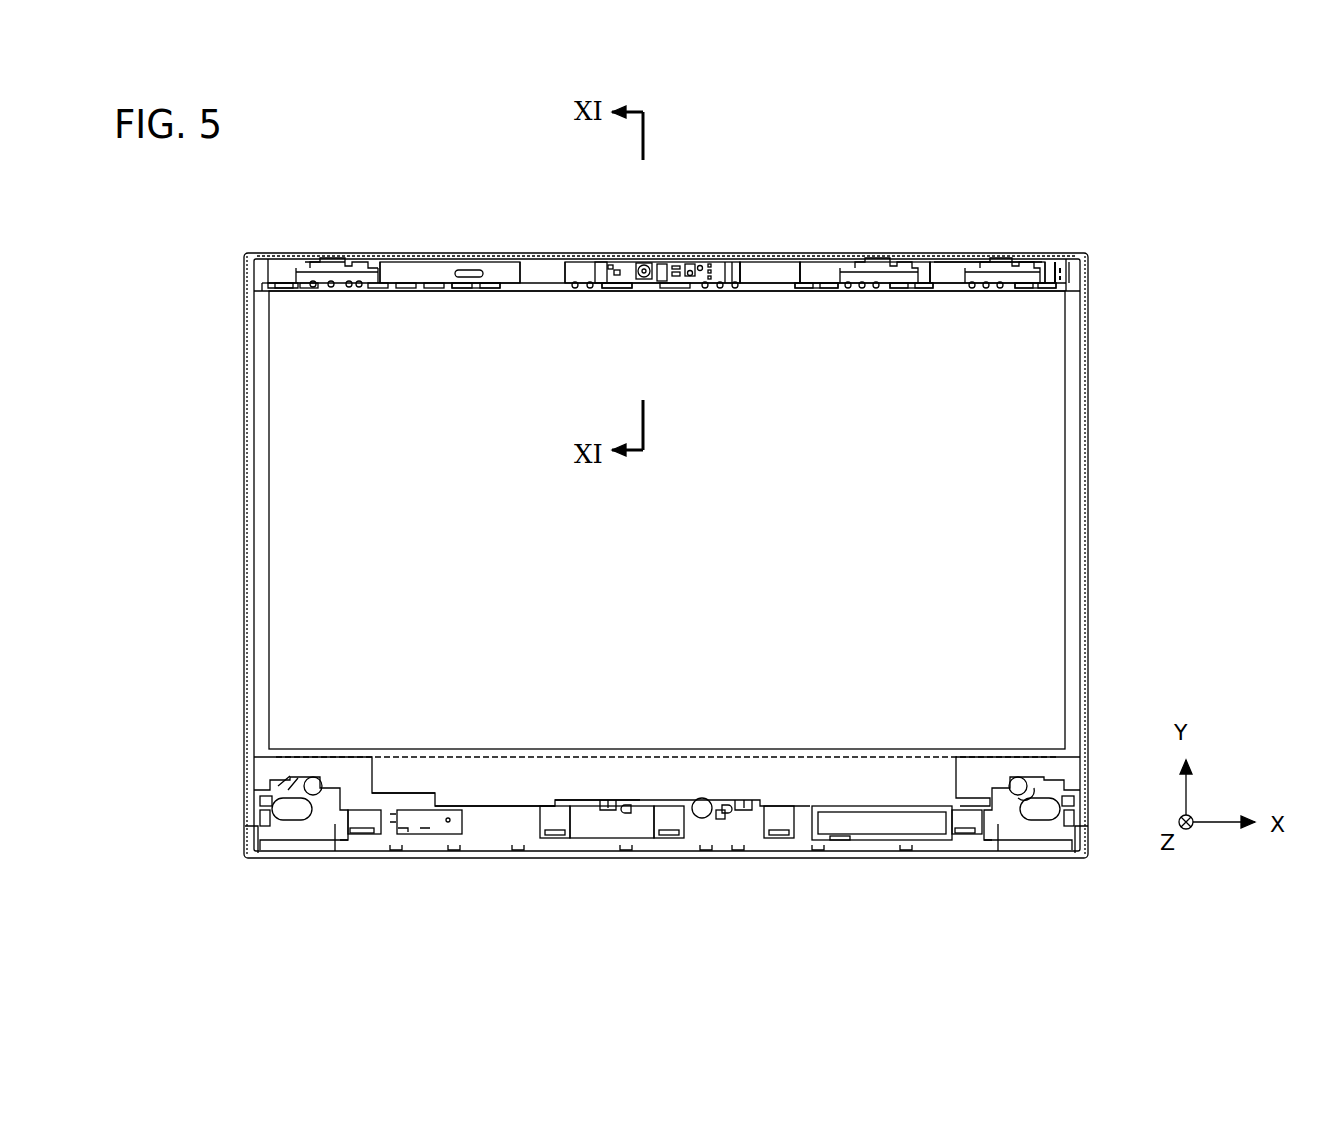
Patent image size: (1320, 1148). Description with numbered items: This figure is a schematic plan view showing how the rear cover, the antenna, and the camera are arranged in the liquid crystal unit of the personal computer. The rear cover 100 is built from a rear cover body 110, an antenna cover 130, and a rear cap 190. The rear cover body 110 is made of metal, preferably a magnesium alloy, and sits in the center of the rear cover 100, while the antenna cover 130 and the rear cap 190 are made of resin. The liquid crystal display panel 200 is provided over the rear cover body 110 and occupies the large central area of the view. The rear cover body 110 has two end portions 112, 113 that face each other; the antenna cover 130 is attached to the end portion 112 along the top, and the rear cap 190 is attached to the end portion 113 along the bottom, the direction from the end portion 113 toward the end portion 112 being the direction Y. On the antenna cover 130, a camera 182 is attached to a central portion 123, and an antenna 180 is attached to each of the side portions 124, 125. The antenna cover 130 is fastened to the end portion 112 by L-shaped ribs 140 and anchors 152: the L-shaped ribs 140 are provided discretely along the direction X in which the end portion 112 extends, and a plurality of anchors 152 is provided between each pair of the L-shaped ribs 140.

The rear cover 100 is at (1077, 210).
The rear cover body 110 is at (1082, 643).
The end portion 112 is at (940, 262).
The end portion 113 is at (640, 806).
The central portion 123 is at (760, 262).
The side portion 124 is at (418, 262).
The side portion 125 is at (952, 262).
The antenna cover 130 is at (812, 262).
The L-shaped rib 140 is at (284, 292).
The anchor 152 is at (345, 292).
The antenna 180 is at (355, 265).
The camera 182 is at (664, 262).
The rear cap 190 is at (858, 826).
The liquid crystal display panel 200 is at (1042, 574).